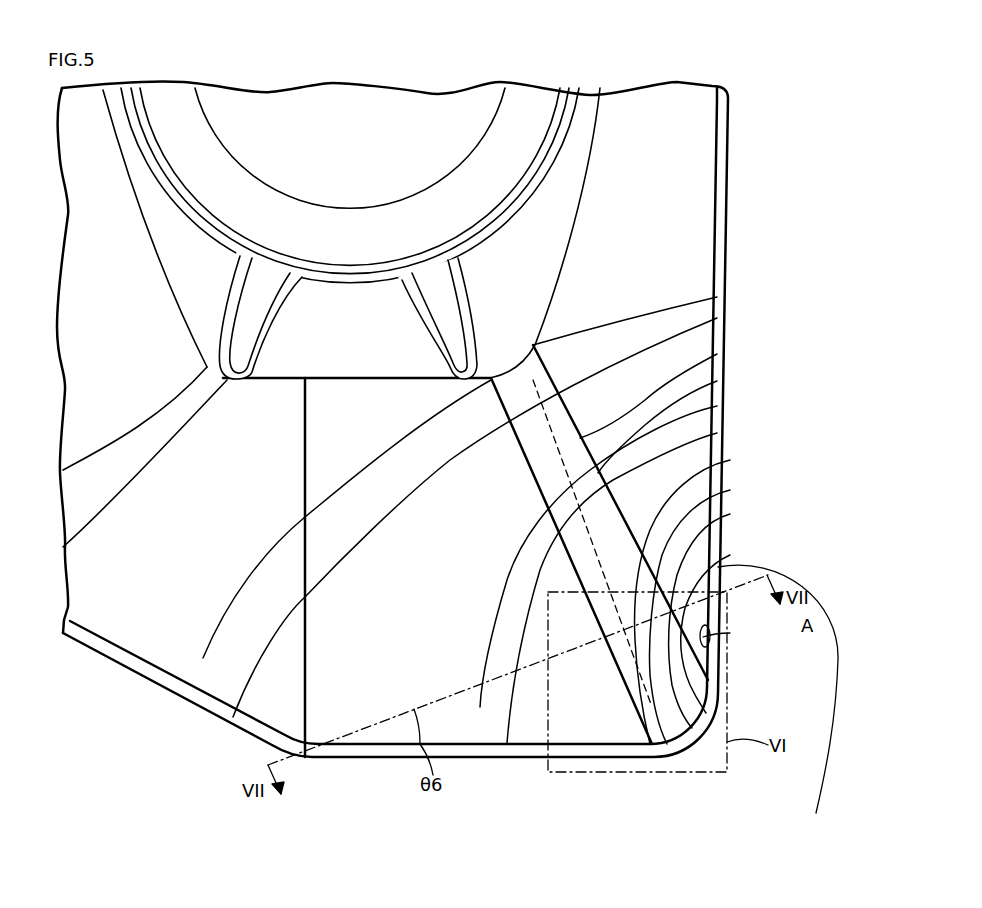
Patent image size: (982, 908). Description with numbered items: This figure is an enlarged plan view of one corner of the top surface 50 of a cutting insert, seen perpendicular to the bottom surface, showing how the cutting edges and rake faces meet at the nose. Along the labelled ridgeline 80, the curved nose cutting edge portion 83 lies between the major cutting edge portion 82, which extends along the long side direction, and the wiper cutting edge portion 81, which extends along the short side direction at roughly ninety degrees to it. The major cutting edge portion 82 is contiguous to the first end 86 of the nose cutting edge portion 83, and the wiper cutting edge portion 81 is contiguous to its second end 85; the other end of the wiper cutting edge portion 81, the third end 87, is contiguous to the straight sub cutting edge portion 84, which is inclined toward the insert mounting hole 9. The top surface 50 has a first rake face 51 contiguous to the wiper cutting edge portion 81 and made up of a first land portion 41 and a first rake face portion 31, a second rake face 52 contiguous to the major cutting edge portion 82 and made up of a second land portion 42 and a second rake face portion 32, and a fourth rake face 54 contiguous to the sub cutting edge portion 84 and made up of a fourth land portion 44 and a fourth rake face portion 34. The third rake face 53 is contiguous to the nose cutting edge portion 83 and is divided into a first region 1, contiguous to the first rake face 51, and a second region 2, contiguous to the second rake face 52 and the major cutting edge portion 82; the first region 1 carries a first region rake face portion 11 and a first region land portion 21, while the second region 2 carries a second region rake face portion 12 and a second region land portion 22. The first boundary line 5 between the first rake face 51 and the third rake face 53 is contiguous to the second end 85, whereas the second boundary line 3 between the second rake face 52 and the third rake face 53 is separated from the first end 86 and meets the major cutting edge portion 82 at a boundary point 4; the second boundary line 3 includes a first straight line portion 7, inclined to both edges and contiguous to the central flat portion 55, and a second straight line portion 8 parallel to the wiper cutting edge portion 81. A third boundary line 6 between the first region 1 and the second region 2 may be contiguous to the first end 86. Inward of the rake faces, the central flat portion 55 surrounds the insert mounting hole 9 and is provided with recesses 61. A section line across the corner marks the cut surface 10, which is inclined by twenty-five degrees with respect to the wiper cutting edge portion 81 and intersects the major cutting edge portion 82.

The first region 1 is at (790, 455).
The second region 2 is at (790, 510).
The second boundary line 3 is at (770, 632).
The boundary point 4 is at (718, 663).
The first boundary line 5 is at (630, 697).
The third boundary line 6 is at (720, 695).
The first straight line portion 7 is at (730, 633).
The second straight line portion 8 is at (730, 650).
The insert mounting hole 9 is at (417, 192).
The cut surface 10 is at (373, 745).
The first region rake face portion 11 is at (730, 460).
The second region rake face portion 12 is at (730, 514).
The first region land portion 21 is at (730, 490).
The second region land portion 22 is at (730, 555).
The first rake face portion 31 is at (717, 354).
The second rake face portion 32 is at (717, 433).
The fourth rake face portion 34 is at (717, 297).
The first land portion 41 is at (717, 381).
The second land portion 42 is at (717, 406).
The fourth land portion 44 is at (717, 318).
The top surface 50 is at (842, 550).
The first rake face 51 is at (812, 345).
The second rake face 52 is at (812, 400).
The third rake face 53 is at (815, 455).
The fourth rake face 54 is at (812, 288).
The central flat portion 55 is at (513, 291).
The recess 61 is at (440, 292).
The ridgeline 80 is at (197, 838).
The wiper cutting edge portion 81 is at (470, 758).
The major cutting edge portion 82 is at (818, 800).
The nose cutting edge portion 83 is at (688, 760).
The sub cutting edge portion 84 is at (205, 709).
The second end 85 is at (650, 759).
The first end 86 is at (725, 757).
The third end 87 is at (307, 758).